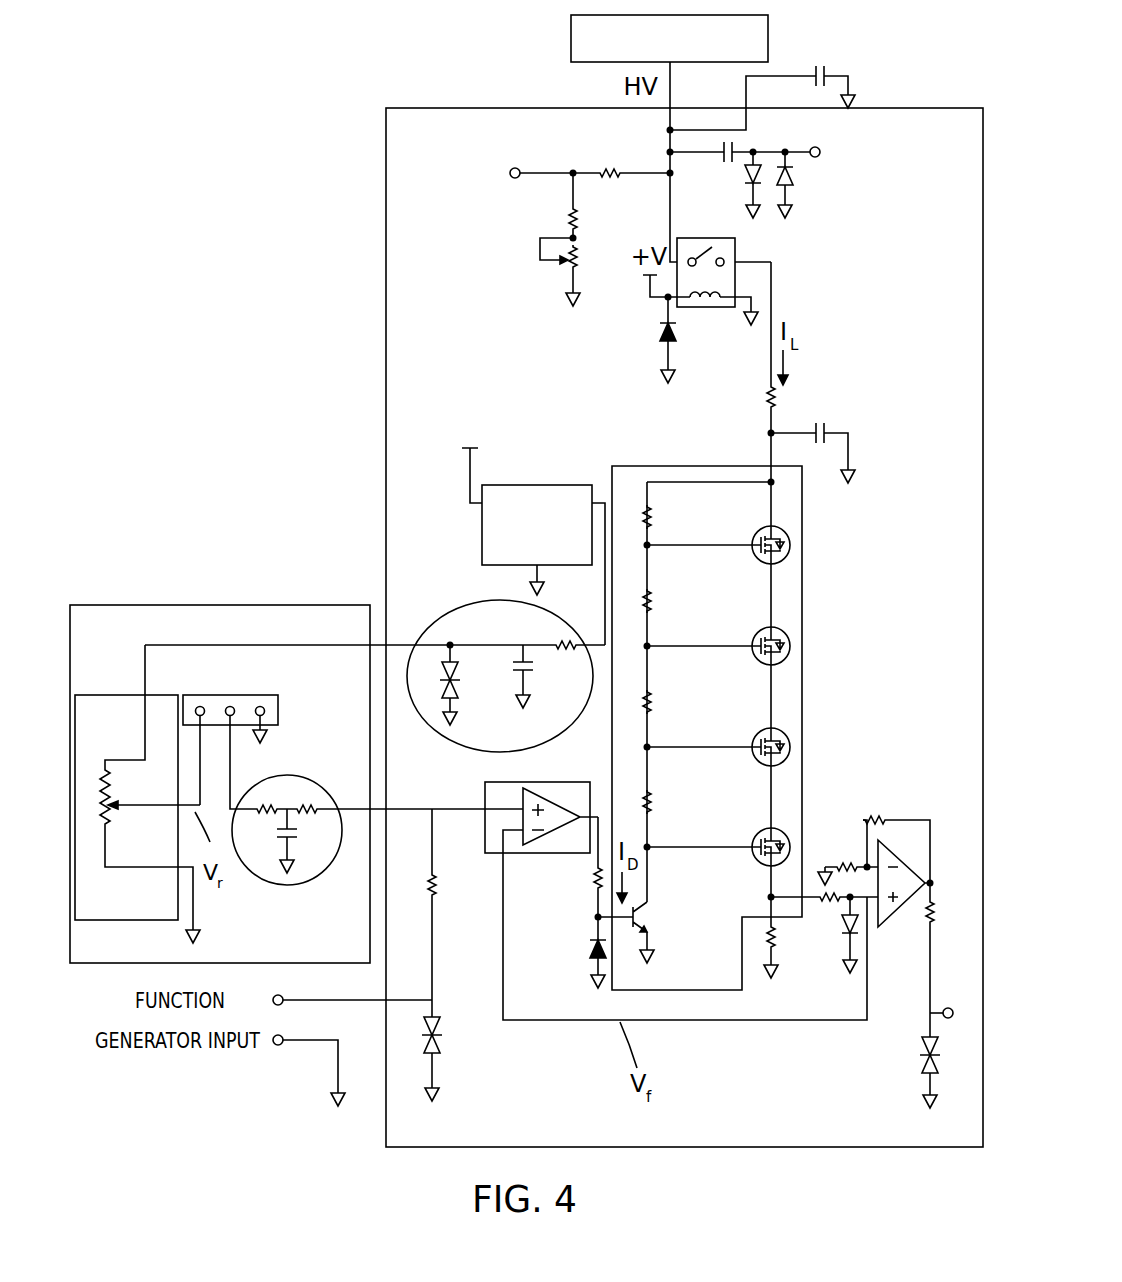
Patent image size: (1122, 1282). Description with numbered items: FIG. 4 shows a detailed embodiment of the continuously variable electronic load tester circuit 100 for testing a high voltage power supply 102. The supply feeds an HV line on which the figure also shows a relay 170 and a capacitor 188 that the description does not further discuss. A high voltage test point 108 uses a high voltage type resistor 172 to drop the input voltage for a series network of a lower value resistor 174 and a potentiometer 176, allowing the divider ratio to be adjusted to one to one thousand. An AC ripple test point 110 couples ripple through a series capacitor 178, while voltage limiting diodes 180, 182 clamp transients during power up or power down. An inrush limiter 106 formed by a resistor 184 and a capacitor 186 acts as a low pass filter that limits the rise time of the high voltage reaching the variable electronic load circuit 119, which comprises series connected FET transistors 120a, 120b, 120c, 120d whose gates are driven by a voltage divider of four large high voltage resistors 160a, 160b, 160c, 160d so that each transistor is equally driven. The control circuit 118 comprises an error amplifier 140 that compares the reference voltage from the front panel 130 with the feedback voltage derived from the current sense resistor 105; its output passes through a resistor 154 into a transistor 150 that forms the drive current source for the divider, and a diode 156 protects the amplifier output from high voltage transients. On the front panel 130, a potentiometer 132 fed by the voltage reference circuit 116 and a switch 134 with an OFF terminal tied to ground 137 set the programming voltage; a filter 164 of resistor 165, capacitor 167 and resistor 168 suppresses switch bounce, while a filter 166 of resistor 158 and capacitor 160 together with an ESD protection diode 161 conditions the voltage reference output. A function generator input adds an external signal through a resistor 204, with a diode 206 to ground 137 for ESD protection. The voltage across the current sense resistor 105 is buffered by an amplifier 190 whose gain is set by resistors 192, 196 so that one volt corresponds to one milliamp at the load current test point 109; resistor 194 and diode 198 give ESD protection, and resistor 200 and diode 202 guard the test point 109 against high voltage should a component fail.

The continuously variable electronic load tester circuit 100 is at (467, 107).
The power supply 102 is at (571, 40).
The current sense resistor 105 is at (778, 955).
The inrush limiter 106 is at (865, 384).
The high voltage test point 108 is at (513, 180).
The load current test point 109 is at (950, 1020).
The AC ripple test point 110 is at (817, 158).
The voltage reference circuit 116 is at (537, 485).
The control circuit 118 is at (490, 855).
The variable electronic load circuit 119 is at (715, 465).
The transistor 120a is at (750, 553).
The transistor 120b is at (750, 654).
The transistor 120c is at (750, 755).
The transistor 120d is at (750, 855).
The user interface front panel 130 is at (222, 605).
The potentiometer 132 is at (120, 693).
The switch 134 is at (282, 728).
The ground 137 is at (440, 1100).
The error amplifier 140 is at (565, 795).
The transistor 150 is at (655, 930).
The resistor 154 is at (593, 878).
The diode 156 is at (595, 960).
The resistor 158 is at (567, 640).
The capacitor 160 is at (519, 686).
The resistor 160a is at (655, 520).
The resistor 160b is at (655, 600).
The resistor 160c is at (655, 700).
The resistor 160d is at (655, 800).
The diode 161 is at (445, 702).
The filter 164 is at (290, 888).
The resistor 165 is at (258, 818).
The filter 166 is at (455, 612).
The capacitor 167 is at (282, 847).
The resistor 168 is at (305, 820).
The relay 170 is at (738, 250).
The high voltage type resistor 172 is at (603, 170).
The lower value resistor 174 is at (580, 224).
The potentiometer 176 is at (580, 265).
The series capacitor 178 is at (736, 146).
The voltage limiting diode 180 is at (745, 175).
The voltage limiting diode 182 is at (792, 192).
The resistor 184 is at (778, 400).
The capacitor 186 is at (830, 425).
The capacitor 188 is at (827, 72).
The amplifier 190 is at (895, 910).
The resistor 192 is at (885, 815).
The resistor 194 is at (845, 860).
The resistor 196 is at (940, 930).
The diode 198 is at (925, 1060).
The resistor 200 is at (833, 907).
The diode 202 is at (860, 950).
The resistor 204 is at (437, 895).
The diode 206 is at (440, 1025).